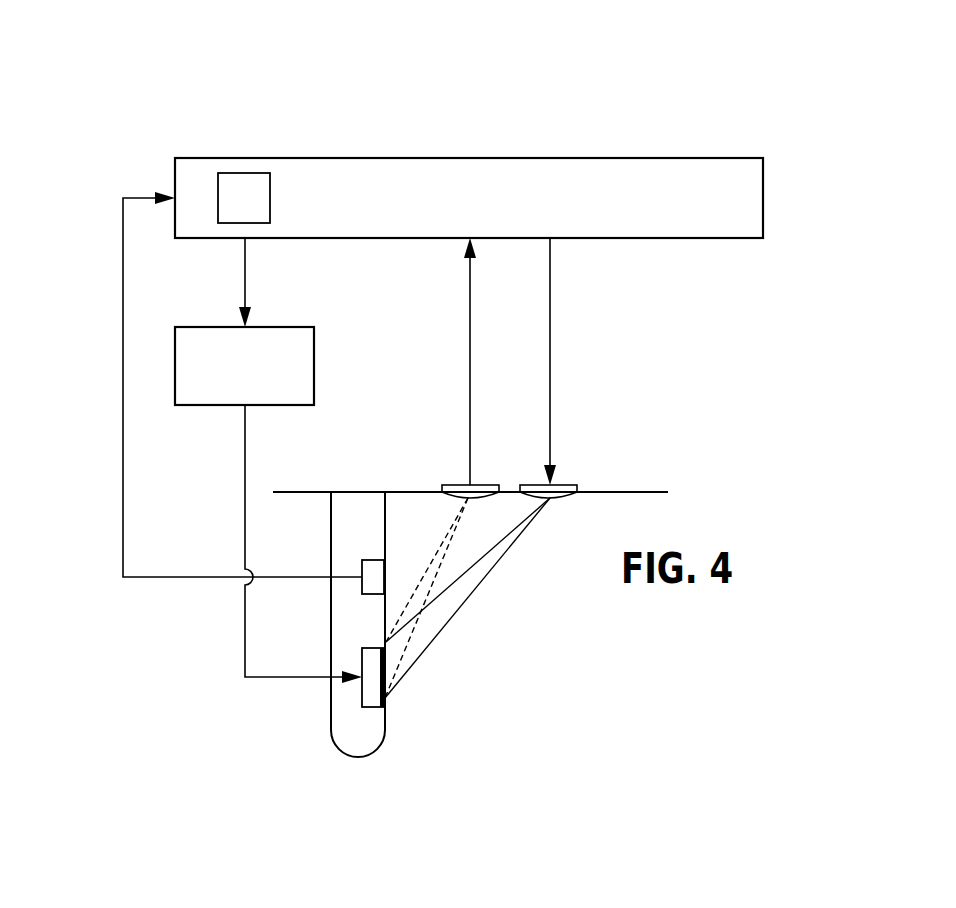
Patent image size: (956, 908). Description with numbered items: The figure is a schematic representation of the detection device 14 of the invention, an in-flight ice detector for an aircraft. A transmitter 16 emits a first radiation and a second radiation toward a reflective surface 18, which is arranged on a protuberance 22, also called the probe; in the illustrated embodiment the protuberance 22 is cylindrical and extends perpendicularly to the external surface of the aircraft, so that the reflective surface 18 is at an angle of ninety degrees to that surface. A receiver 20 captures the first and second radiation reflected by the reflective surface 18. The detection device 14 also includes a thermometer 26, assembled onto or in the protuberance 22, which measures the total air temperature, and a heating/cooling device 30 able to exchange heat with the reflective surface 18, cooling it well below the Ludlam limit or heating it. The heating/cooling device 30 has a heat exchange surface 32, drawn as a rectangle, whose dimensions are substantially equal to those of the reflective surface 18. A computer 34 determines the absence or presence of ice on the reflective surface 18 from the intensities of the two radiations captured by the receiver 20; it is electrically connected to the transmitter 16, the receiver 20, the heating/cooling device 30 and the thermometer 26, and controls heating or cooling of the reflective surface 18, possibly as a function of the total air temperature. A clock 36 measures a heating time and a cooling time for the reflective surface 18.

The detection device 14 is at (139, 136).
The computer 34 is at (702, 157).
The clock 36 is at (244, 198).
The heating/cooling device 30 is at (290, 326).
The receiver 20 is at (452, 485).
The transmitter 16 is at (572, 485).
The protuberance 22 is at (345, 545).
The thermometer 26 is at (373, 575).
The heat exchange surface 32 is at (373, 690).
The reflective surface 18 is at (385, 681).